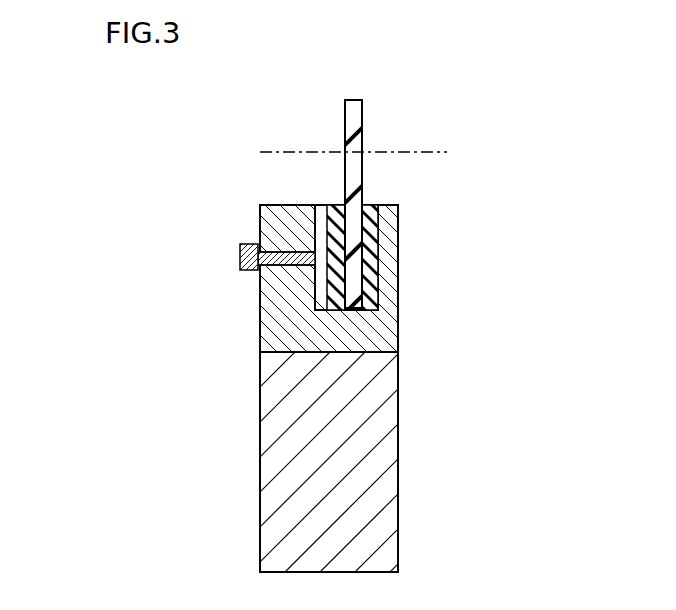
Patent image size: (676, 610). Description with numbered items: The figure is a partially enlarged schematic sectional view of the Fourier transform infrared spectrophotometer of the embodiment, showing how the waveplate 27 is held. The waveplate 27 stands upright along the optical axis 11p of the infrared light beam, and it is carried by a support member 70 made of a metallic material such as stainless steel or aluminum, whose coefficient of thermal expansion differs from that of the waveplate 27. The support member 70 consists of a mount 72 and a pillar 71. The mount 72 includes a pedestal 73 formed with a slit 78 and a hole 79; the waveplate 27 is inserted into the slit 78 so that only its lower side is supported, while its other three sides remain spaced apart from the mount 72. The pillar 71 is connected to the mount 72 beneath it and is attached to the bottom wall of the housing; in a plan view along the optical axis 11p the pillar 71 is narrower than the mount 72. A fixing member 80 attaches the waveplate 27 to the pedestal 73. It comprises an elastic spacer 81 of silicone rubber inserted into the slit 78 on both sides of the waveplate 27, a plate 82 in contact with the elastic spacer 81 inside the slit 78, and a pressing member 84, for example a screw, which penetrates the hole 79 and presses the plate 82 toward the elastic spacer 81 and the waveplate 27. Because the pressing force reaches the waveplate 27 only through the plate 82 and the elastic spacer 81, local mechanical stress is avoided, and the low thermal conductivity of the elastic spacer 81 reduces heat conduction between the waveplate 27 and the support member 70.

The waveplate 27 is at (352, 100).
The optical axis of infrared light beam 11p is at (359, 132).
The support member 70 is at (327, 390).
The pillar 71 is at (327, 460).
The mount 72 is at (325, 280).
The pedestal 73 is at (398, 320).
The slit 78 is at (380, 282).
The hole 79 is at (263, 277).
The fixing member 80 is at (259, 247).
The elastic spacer 81 is at (371, 228).
The plate 82 is at (316, 235).
The pressing member 84 is at (240, 257).